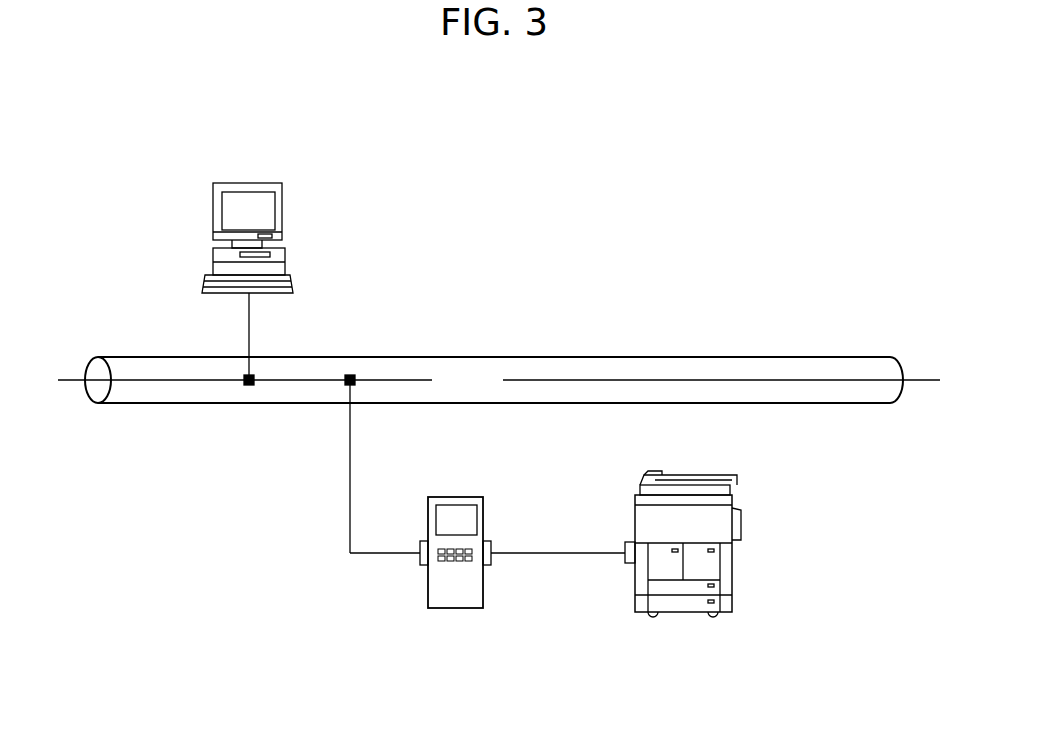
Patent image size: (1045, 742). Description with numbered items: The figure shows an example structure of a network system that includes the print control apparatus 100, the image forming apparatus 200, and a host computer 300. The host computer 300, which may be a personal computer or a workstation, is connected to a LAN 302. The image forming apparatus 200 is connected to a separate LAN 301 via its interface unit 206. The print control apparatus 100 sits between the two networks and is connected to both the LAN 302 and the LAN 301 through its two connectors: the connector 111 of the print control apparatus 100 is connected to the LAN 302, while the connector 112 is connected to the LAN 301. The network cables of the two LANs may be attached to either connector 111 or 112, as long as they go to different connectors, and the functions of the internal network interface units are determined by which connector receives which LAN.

The host computer 300 is at (246, 183).
The LAN 302 is at (843, 357).
The print control apparatus 100 is at (460, 609).
The connector 111 is at (422, 541).
The connector 112 is at (490, 541).
The LAN 301 is at (572, 553).
The interface unit 206 is at (628, 563).
The image forming apparatus 200 is at (683, 618).